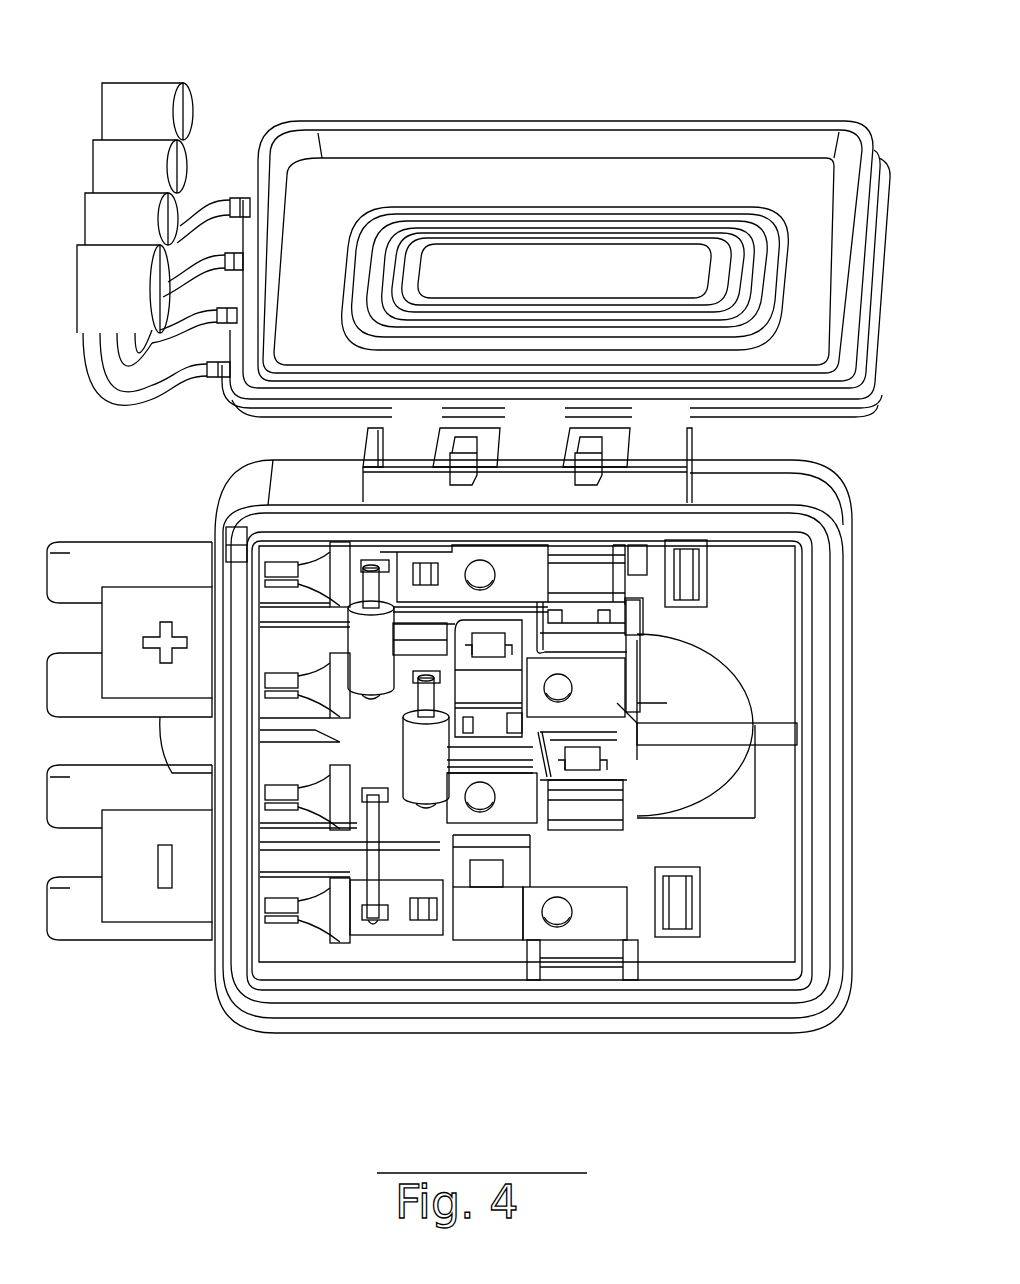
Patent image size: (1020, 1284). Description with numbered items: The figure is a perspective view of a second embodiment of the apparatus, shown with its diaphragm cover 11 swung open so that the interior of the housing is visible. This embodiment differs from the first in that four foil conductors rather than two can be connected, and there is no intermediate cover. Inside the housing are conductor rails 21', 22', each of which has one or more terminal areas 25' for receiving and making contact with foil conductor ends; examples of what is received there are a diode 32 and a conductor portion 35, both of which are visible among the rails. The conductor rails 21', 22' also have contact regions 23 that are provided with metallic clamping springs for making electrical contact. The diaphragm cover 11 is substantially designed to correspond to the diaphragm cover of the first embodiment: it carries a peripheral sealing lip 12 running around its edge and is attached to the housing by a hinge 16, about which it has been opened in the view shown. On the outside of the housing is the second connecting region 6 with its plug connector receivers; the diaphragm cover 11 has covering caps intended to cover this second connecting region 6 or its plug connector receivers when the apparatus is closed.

The second connecting region 6 is at (145, 598).
The diaphragm cover 11 is at (355, 170).
The peripheral sealing lip 12 is at (618, 142).
The hinge 16 is at (663, 447).
The conductor rail 21' is at (382, 1011).
The conductor rail 22' is at (310, 684).
The contact region 23 is at (493, 922).
The terminal area 25' is at (417, 994).
The diode 32 is at (413, 760).
The conductor portion 35 is at (370, 877).